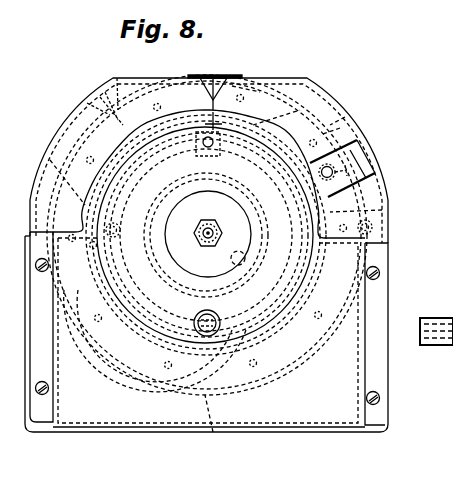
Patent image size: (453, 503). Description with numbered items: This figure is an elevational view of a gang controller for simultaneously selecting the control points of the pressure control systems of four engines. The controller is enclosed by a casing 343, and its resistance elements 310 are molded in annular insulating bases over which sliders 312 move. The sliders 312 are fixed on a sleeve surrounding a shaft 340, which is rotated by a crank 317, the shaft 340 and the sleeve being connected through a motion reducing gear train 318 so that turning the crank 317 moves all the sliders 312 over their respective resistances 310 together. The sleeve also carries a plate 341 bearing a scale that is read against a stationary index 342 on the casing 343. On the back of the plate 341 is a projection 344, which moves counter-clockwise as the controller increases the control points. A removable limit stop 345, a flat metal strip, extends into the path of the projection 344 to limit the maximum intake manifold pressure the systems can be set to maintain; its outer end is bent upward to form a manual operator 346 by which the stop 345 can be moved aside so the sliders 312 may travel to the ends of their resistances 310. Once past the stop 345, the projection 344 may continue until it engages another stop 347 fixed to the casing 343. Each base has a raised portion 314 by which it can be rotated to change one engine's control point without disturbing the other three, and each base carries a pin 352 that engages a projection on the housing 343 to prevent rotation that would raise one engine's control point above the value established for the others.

The resistance element 310 is at (345, 117).
The slider 312 is at (202, 75).
The raised portion 314 is at (218, 78).
The crank 317 is at (198, 313).
The motion reducing gear train 318 is at (214, 434).
The shaft 340 is at (210, 222).
The plate 341 is at (253, 125).
The stationary index 342 is at (242, 83).
The casing 343 is at (340, 128).
The projection 344 is at (50, 160).
The removable limit stop 345 is at (382, 210).
The manual operator 346 is at (370, 160).
The stop 347 is at (216, 156).
The pin 352 is at (82, 105).